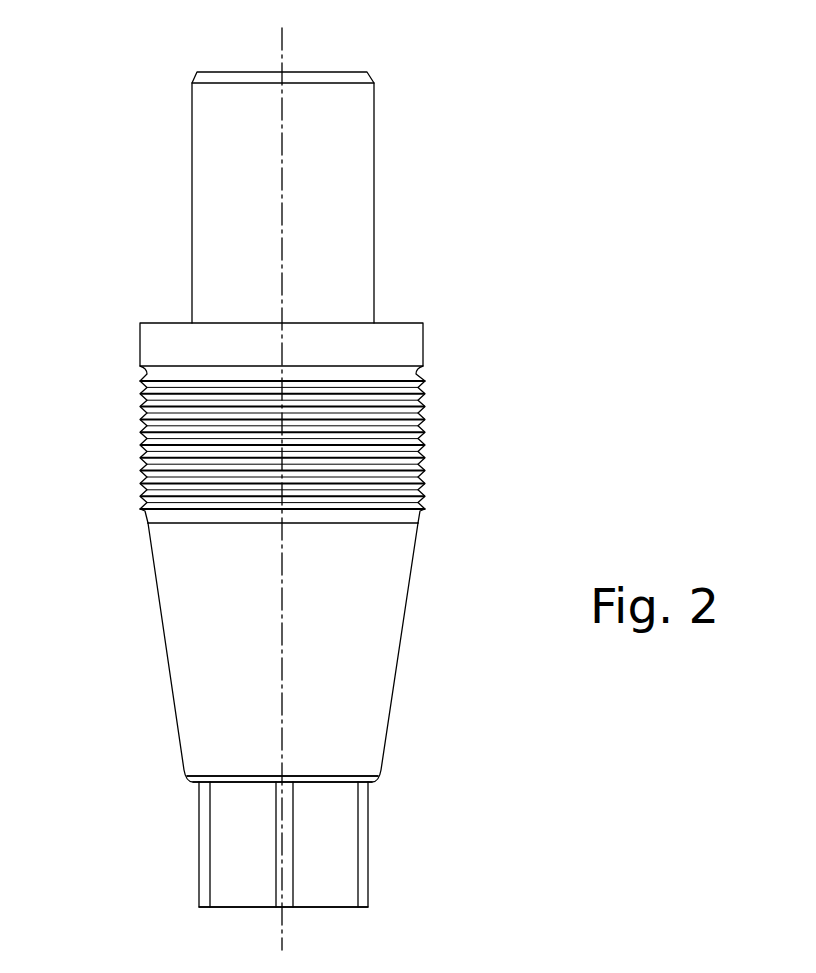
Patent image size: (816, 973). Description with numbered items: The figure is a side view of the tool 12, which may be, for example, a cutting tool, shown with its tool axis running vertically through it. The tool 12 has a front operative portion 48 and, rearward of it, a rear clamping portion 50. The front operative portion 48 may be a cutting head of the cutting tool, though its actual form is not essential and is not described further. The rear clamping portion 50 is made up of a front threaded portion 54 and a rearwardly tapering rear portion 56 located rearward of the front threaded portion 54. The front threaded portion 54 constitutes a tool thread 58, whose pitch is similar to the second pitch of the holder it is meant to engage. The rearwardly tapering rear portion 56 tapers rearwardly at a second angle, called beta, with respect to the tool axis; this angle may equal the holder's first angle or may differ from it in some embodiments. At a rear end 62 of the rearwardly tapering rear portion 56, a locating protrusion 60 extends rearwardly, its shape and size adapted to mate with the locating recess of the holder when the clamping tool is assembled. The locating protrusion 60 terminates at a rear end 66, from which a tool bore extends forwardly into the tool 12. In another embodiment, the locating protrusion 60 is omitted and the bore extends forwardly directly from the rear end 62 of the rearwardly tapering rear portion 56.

The tool 12 is at (490, 176).
The front operative portion 48 is at (148, 144).
The rear clamping portion 50 is at (266, 454).
The front threaded portion 54 is at (427, 412).
The tool thread 58 is at (425, 498).
The rearwardly tapering rear portion 56 is at (413, 592).
The rear end 62 is at (383, 777).
The locating protrusion 60 is at (368, 852).
The rear end 66 is at (360, 907).